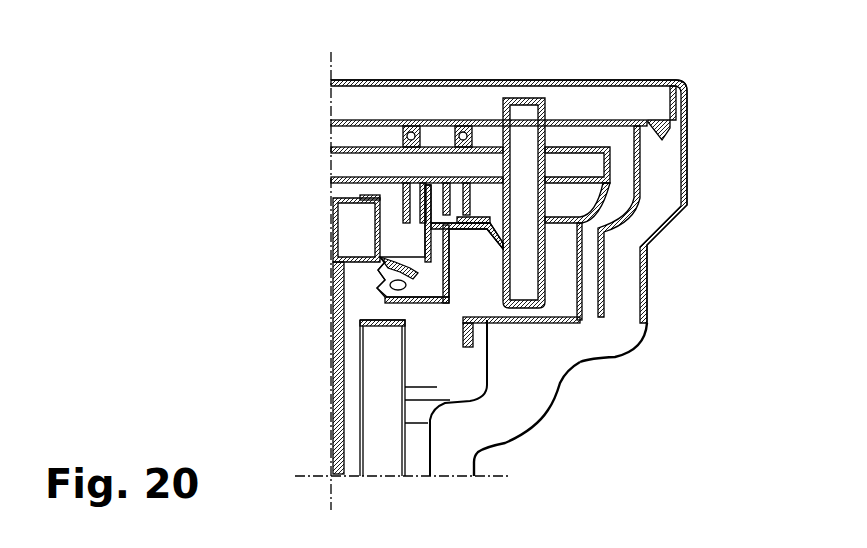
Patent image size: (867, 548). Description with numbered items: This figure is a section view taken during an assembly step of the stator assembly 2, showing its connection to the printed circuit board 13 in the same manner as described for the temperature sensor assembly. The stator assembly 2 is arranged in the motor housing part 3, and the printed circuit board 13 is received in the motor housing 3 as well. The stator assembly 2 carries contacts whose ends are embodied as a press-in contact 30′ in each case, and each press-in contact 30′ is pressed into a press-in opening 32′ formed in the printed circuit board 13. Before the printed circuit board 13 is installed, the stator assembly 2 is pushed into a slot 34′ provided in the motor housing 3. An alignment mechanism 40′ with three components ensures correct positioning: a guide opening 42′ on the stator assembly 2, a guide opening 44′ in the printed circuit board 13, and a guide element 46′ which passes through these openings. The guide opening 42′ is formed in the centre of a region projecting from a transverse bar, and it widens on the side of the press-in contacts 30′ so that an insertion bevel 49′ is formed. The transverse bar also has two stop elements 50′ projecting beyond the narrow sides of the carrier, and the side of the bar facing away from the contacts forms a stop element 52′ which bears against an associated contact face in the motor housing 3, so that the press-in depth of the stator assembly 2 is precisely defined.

The stator assembly 2 is at (436, 338).
The motor housing part 3 is at (518, 380).
The printed circuit board 13 is at (378, 167).
The press-in contact 30′ is at (412, 132).
The press-in opening 32′ is at (405, 148).
The slot 34′ is at (587, 315).
The alignment mechanism 40′ is at (550, 197).
The guide opening 42′ is at (543, 238).
The guide opening 44′ is at (543, 157).
The guide element 46′ is at (523, 133).
The insertion bevel 49′ is at (492, 238).
The stop element 50′ is at (562, 272).
The stop element 52′ is at (527, 318).